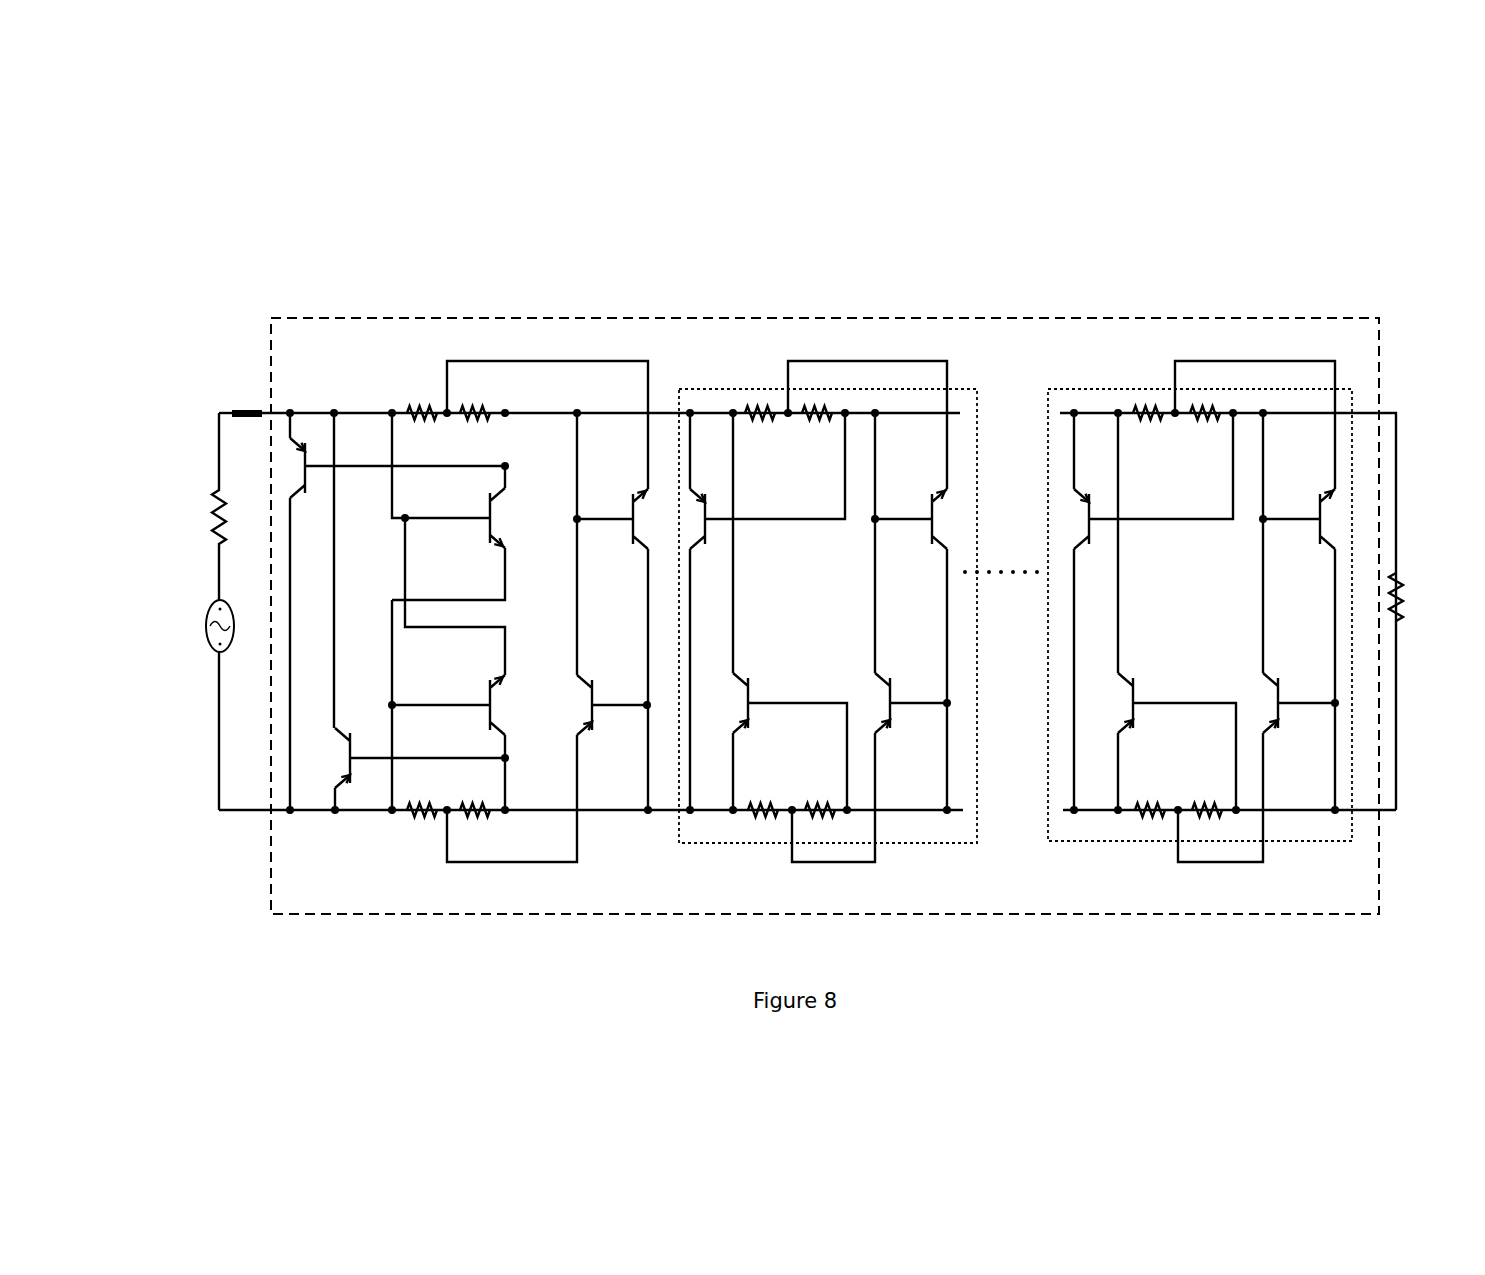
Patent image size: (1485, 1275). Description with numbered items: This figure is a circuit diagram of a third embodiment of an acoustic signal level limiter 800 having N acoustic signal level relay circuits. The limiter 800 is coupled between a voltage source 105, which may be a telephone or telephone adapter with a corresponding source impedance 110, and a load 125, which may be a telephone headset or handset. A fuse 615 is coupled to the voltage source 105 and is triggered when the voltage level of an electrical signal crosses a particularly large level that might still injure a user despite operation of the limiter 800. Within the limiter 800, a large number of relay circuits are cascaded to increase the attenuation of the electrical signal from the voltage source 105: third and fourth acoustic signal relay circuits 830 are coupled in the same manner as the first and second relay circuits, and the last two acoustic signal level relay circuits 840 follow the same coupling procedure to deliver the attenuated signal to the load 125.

The acoustic signal level limiter 800 is at (470, 317).
The third and fourth acoustic signal relay circuits 830 is at (741, 389).
The N and N−1 acoustic signal level relay circuits 840 is at (1071, 389).
The fuse 615 is at (232, 413).
The source impedance 110 is at (215, 524).
The voltage source 105 is at (205, 627).
The load 125 is at (1410, 579).